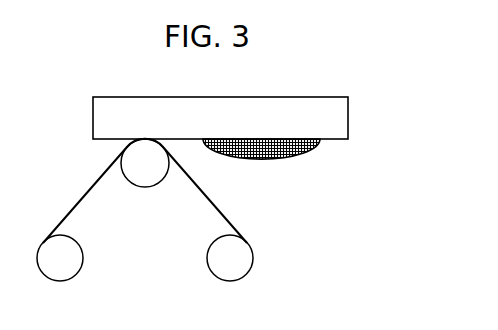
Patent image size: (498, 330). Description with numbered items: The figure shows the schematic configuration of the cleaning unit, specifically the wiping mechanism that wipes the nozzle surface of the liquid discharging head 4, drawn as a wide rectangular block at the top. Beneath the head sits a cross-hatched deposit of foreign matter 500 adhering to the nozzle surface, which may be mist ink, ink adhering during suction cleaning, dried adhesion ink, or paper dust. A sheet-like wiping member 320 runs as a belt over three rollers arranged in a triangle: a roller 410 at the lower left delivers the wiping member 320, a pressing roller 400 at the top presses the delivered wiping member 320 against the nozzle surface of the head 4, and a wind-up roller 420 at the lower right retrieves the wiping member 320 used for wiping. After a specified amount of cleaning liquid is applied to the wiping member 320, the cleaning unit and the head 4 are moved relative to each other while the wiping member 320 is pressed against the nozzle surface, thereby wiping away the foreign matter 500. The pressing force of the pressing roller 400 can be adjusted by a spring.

The liquid discharging head 4 is at (348, 117).
The foreign matter 500 is at (278, 158).
The wiping member 320 is at (87, 192).
The pressing roller 400 is at (142, 187).
The roller 410 is at (77, 276).
The wind-up roller 420 is at (247, 276).